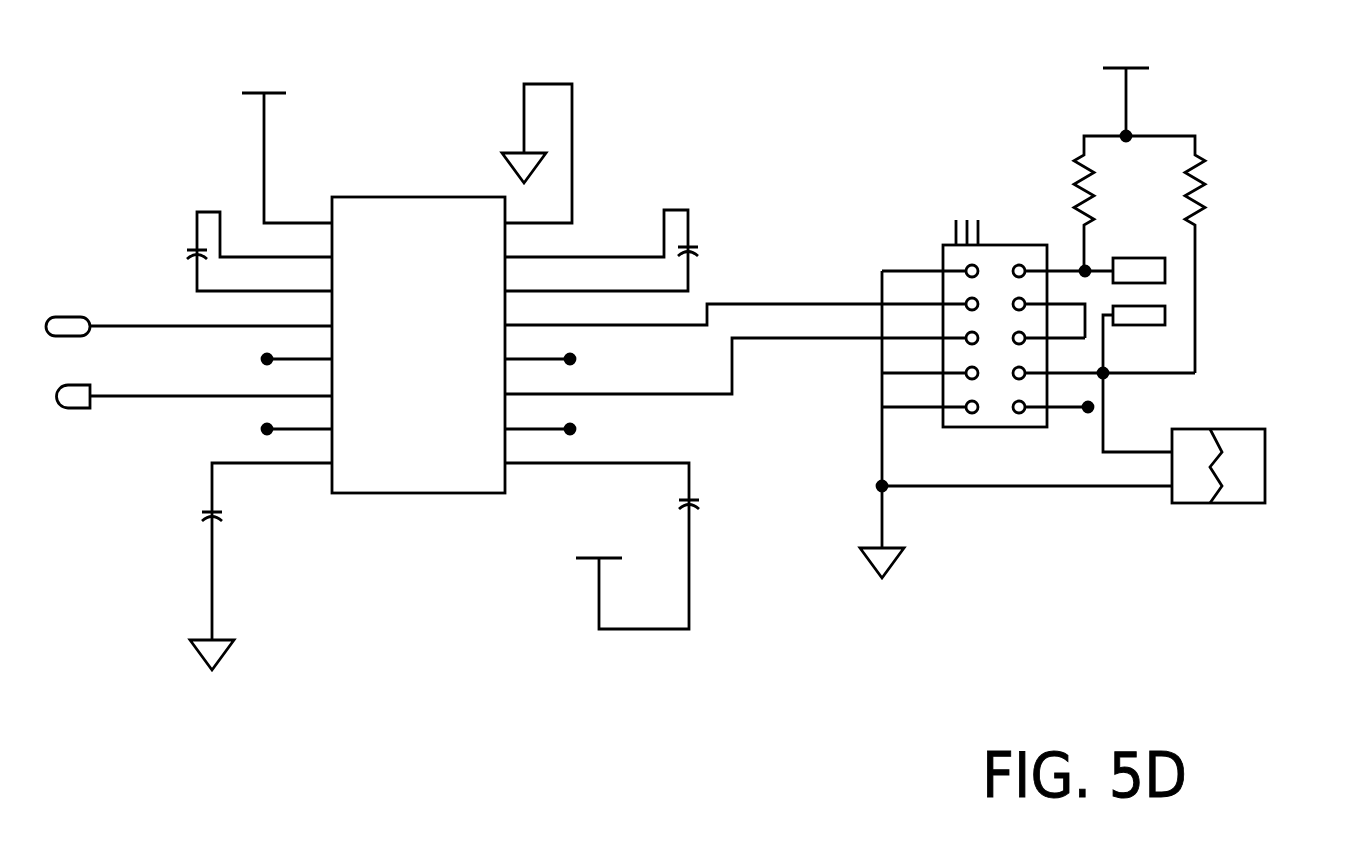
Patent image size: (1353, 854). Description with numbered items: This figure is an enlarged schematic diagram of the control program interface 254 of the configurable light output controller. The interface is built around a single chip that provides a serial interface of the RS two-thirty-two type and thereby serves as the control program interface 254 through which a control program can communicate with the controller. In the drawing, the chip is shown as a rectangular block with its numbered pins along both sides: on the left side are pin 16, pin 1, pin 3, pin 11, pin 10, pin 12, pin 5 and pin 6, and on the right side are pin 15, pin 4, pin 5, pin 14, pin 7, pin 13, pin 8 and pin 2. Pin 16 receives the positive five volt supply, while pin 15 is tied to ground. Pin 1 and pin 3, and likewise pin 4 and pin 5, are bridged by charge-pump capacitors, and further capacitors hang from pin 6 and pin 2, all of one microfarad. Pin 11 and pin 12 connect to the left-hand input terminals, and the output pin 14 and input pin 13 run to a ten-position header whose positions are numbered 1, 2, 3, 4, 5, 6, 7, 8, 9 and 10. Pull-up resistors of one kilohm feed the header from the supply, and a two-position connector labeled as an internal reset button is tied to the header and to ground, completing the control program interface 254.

The control program interface 254 is at (694, 398).
The pin 1 is at (679, 335).
The pin 2 is at (838, 434).
The pin 3 is at (581, 281).
The pin 4 is at (795, 274).
The pin 5 is at (614, 343).
The pin 6 is at (637, 488).
The pin 7 is at (735, 353).
The pin 8 is at (850, 371).
The pin 9 is at (924, 394).
The pin 10 is at (677, 370).
The pin 11 is at (189, 315).
The pin 12 is at (195, 385).
The pin 13 is at (693, 369).
The pin 14 is at (693, 313).
The pin 15 is at (537, 157).
The pin 16 is at (287, 161).